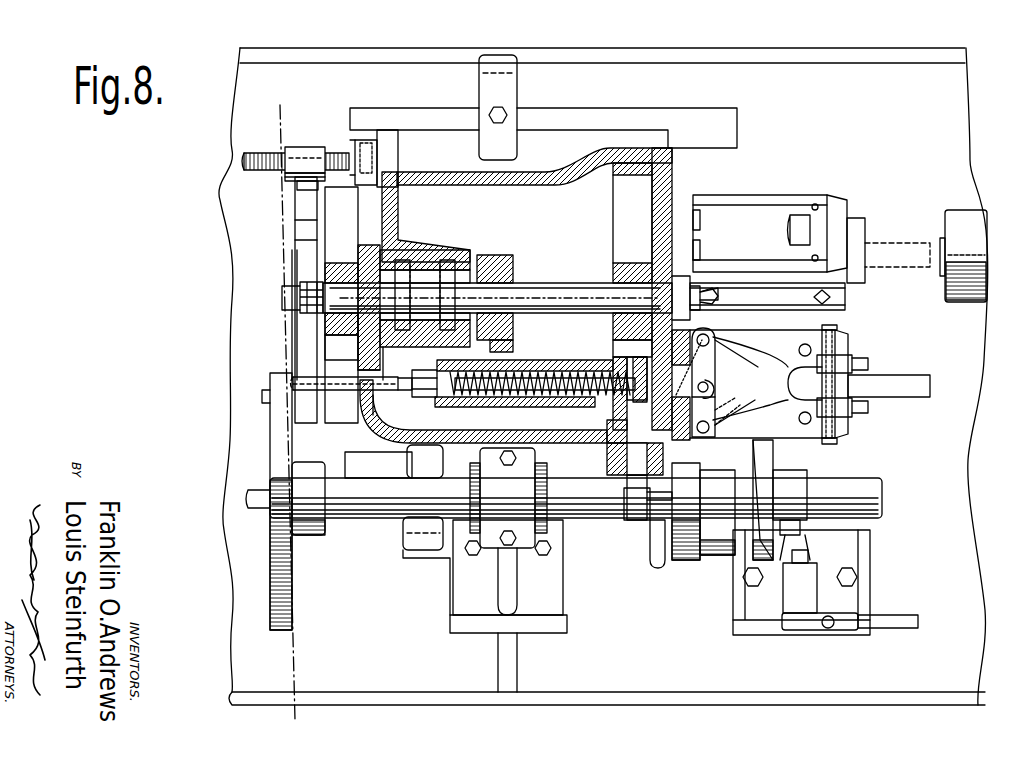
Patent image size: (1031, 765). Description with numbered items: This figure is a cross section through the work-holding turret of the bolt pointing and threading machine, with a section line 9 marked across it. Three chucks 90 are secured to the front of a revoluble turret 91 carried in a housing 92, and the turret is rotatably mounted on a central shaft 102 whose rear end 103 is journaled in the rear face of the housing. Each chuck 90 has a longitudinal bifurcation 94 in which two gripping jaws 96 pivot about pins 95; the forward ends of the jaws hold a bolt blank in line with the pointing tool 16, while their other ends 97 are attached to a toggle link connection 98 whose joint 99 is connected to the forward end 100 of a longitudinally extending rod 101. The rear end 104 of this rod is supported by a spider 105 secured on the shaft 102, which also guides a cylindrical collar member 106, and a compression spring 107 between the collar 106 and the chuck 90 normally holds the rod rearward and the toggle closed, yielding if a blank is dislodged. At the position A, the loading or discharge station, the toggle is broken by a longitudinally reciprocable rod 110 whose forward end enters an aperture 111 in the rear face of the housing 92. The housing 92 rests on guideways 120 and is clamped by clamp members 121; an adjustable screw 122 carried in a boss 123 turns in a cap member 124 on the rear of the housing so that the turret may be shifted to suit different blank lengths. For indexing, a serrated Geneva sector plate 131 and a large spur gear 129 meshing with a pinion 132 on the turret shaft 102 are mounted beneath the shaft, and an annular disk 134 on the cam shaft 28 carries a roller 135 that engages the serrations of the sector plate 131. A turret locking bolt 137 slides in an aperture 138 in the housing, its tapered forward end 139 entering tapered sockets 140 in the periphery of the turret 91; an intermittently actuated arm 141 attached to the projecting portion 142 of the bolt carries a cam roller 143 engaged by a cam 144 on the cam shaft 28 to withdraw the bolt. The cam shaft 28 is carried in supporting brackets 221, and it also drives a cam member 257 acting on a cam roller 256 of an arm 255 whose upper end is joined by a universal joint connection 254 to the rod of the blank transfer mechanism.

The section line 9 is at (284, 415).
The pointing tool 16 is at (975, 196).
The cam shaft 28 is at (343, 500).
The chuck 90 is at (780, 200).
The revoluble turret 91 is at (673, 168).
The turret housing 92 is at (606, 145).
The longitudinal bifurcation 94 is at (752, 297).
The pins 95 is at (803, 346).
The gripping jaws 96 is at (846, 335).
The other ends of the jaws 97 is at (722, 350).
The toggle link connection 98 is at (718, 385).
The toggle joint 99 is at (703, 403).
The forward end of rod 100 is at (690, 344).
The longitudinally extending rod 101 is at (508, 372).
The central shaft 102 is at (566, 283).
The rear end of shaft 103 is at (328, 272).
The rear end of toggle actuating rod 104 is at (432, 412).
The spider 105 is at (492, 336).
The cylindrical collar member 106 is at (450, 410).
The compression spring 107 is at (546, 374).
The longitudinally reciprocable rod 110 is at (372, 412).
The aperture 111 is at (383, 410).
The guideways 120 is at (727, 133).
The clamp members 121 is at (482, 83).
The adjustable screw 122 is at (268, 155).
The boss 123 is at (308, 150).
The cap member 124 is at (368, 140).
The large spur gear 129 is at (332, 199).
The Geneva sector plate 131 is at (300, 350).
The pinion 132 is at (330, 328).
The annular disk 134 is at (278, 433).
The roller 135 is at (305, 405).
The turret locking bolt 137 is at (628, 455).
The aperture 138 is at (607, 440).
The forward end of locking bolt 139 is at (605, 422).
The tapered sockets 140 is at (628, 423).
The intermittently actuated arm 141 is at (650, 548).
The projecting portion of bolt 142 is at (636, 520).
The cam roller 143 is at (680, 560).
The cam 144 is at (695, 503).
The cam shaft supporting bracket 221 is at (547, 576).
The universal joint connection 254 is at (842, 630).
The arm 255 is at (790, 610).
The cam roller 256 is at (818, 548).
The cam member 257 is at (775, 540).
The loading or discharge station position A is at (903, 386).